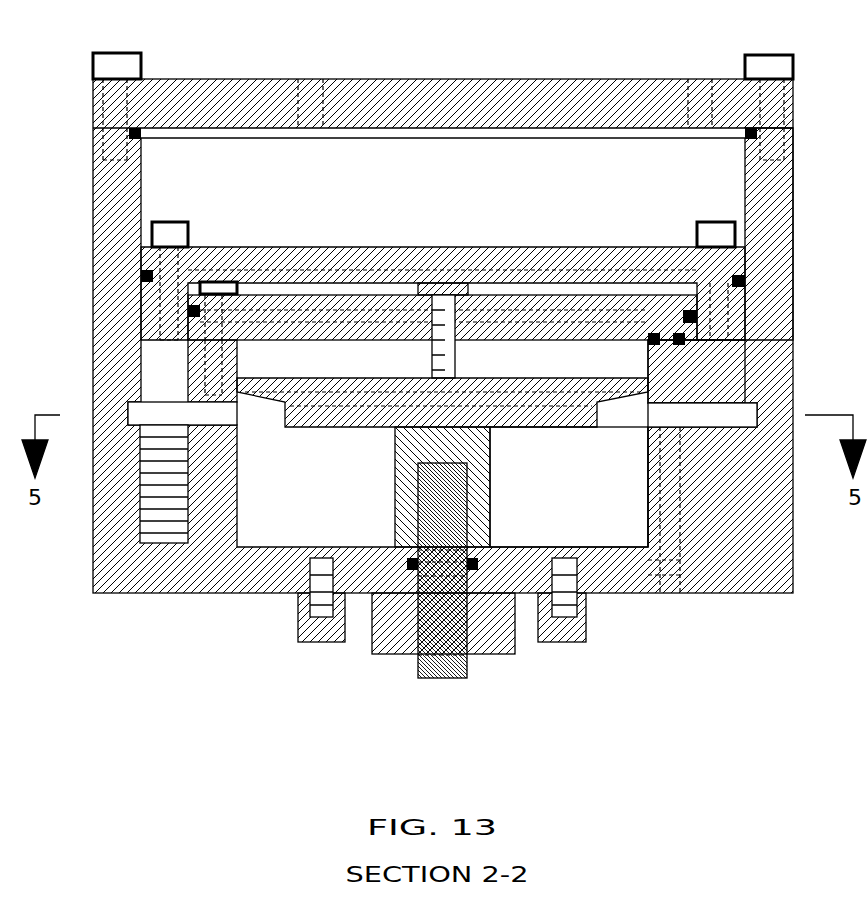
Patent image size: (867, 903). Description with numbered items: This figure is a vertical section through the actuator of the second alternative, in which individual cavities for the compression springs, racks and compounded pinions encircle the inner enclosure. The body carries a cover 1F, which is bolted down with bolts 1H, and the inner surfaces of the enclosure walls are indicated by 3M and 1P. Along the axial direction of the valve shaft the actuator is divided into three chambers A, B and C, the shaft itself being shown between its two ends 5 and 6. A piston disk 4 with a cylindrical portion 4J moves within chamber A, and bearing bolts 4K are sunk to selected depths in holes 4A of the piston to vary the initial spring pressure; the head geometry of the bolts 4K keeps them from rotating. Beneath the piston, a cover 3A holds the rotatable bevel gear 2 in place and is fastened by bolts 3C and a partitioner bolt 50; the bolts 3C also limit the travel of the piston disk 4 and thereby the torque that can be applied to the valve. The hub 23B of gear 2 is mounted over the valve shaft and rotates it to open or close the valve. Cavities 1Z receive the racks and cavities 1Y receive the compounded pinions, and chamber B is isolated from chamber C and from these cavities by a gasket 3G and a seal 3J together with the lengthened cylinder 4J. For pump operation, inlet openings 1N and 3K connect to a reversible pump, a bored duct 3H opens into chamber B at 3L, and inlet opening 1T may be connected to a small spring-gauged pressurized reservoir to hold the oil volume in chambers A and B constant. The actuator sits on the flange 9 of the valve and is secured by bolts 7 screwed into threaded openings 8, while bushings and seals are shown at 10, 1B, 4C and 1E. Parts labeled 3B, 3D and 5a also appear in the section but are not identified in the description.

The cover 1F is at (551, 78).
The inlet opening 1T is at (323, 92).
The bolts 1H is at (120, 53).
The inlet opening 1N is at (687, 105).
The inner surface of enclosure wall 1P is at (740, 136).
The seal 1B is at (742, 215).
The piston disk 4 is at (200, 248).
The cylindrical portion of piston 4J is at (148, 300).
The bearing bolts 4K is at (170, 222).
The bushing 4C is at (745, 281).
The holes in piston 4A is at (697, 316).
The intermediate plate 3B is at (552, 353).
The duct opening 3L is at (665, 297).
The seal 3J is at (745, 338).
The cover 3A is at (405, 290).
The bolts 3C is at (246, 281).
The partitioner bolt 50 is at (443, 367).
The left spacer block 3D is at (238, 364).
The gasket 3G is at (650, 345).
The bevel gear 2 is at (527, 427).
The shaft end 6 is at (467, 462).
The shaft end 5 is at (428, 678).
The shaft seal 5a is at (443, 640).
The hub 23B is at (493, 486).
The bushing 10 is at (414, 652).
The seal 1E is at (363, 643).
The bolts 7 is at (300, 643).
The threaded openings 8 is at (284, 594).
The flange 9 is at (587, 607).
The inlet opening 3K is at (668, 597).
The bored duct 3H is at (647, 495).
The inner surface of enclosure wall 3M is at (647, 452).
The cavities for compounded pinions 1Y is at (158, 370).
The cavities for racks 1Z is at (135, 412).
The chamber A is at (508, 184).
The chamber B is at (310, 213).
The chamber C is at (283, 510).